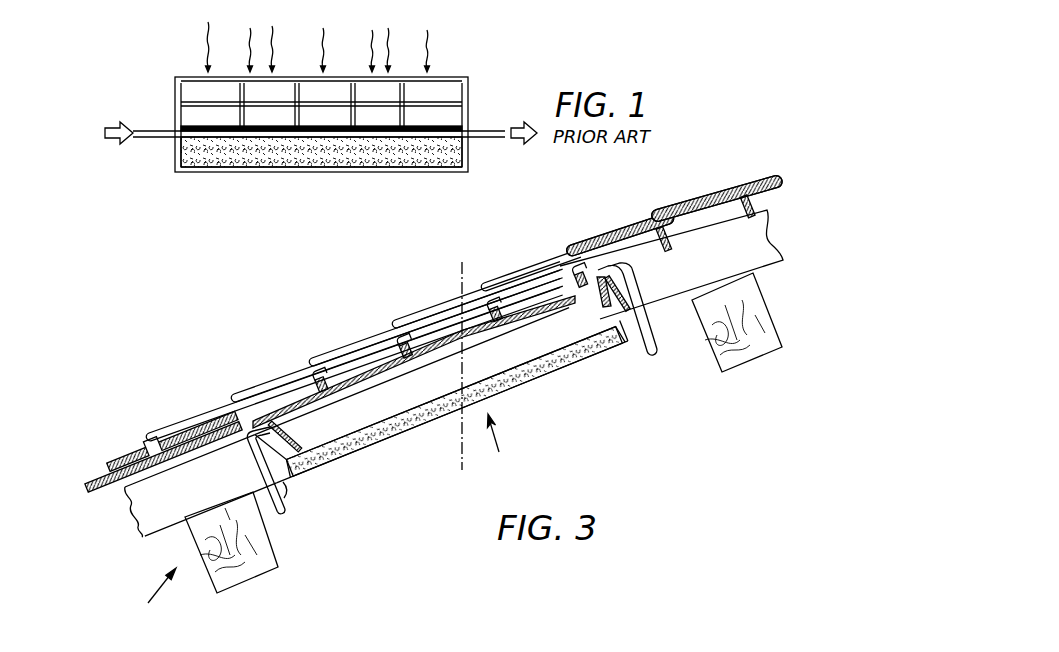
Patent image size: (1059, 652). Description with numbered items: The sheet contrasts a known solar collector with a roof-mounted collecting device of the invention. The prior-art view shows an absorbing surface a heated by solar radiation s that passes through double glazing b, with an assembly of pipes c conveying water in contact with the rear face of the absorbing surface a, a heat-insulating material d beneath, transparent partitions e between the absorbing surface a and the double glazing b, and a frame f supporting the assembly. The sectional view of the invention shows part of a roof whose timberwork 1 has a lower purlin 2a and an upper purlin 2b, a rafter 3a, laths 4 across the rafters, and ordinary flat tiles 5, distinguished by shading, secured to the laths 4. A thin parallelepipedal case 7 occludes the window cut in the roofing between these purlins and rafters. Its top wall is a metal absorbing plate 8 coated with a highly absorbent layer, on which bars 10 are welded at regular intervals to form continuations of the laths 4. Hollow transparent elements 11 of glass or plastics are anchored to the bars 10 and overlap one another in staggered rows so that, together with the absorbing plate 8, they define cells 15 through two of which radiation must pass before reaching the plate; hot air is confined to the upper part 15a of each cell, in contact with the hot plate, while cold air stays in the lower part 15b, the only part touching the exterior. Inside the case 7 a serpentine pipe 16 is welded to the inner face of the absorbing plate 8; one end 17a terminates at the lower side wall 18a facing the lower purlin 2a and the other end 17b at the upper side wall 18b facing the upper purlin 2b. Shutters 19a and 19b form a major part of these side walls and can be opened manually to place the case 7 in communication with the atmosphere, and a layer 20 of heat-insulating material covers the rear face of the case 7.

In FIG. 1, the absorbing surface a is at (196, 128).
In FIG. 1, the double glazing b is at (455, 78).
In FIG. 1, the assembly of pipes c is at (150, 138).
In FIG. 1, the heat-insulating material d is at (333, 156).
In FIG. 1, the transparent partitions e is at (300, 98).
In FIG. 1, the frame f is at (468, 118).
In FIG. 1, the solar radiation s is at (206, 40).
In FIG. 3, the timberwork 1 is at (157, 600).
In FIG. 3, the lower purlin 2a is at (265, 566).
In FIG. 3, the upper purlin 2b is at (765, 346).
In FIG. 3, the rafter 3a is at (157, 502).
In FIG. 3, the laths 4 is at (119, 469).
In FIG. 3, the flat tiles 5 is at (698, 200).
In FIG. 3, the case 7 is at (492, 450).
In FIG. 3, the absorbing plate 8 is at (540, 300).
In FIG. 3, the bars 10 is at (492, 316).
In FIG. 3, the hollow elements 11 is at (281, 380).
In FIG. 3, the cells 15 is at (268, 414).
In FIG. 3, the upper part of cell 15a is at (430, 342).
In FIG. 3, the lower part of cell 15b is at (343, 357).
In FIG. 3, the pipe 16 is at (512, 322).
In FIG. 3, the end of pipe 17a is at (284, 512).
In FIG. 3, the other end of pipe 17b is at (630, 288).
In FIG. 3, the lower side wall 18a is at (284, 488).
In FIG. 3, the upper side wall 18b is at (622, 325).
In FIG. 3, the shutter 19a is at (300, 448).
In FIG. 3, the shutter 19b is at (628, 296).
In FIG. 3, the layer of heat-insulating material 20 is at (563, 363).